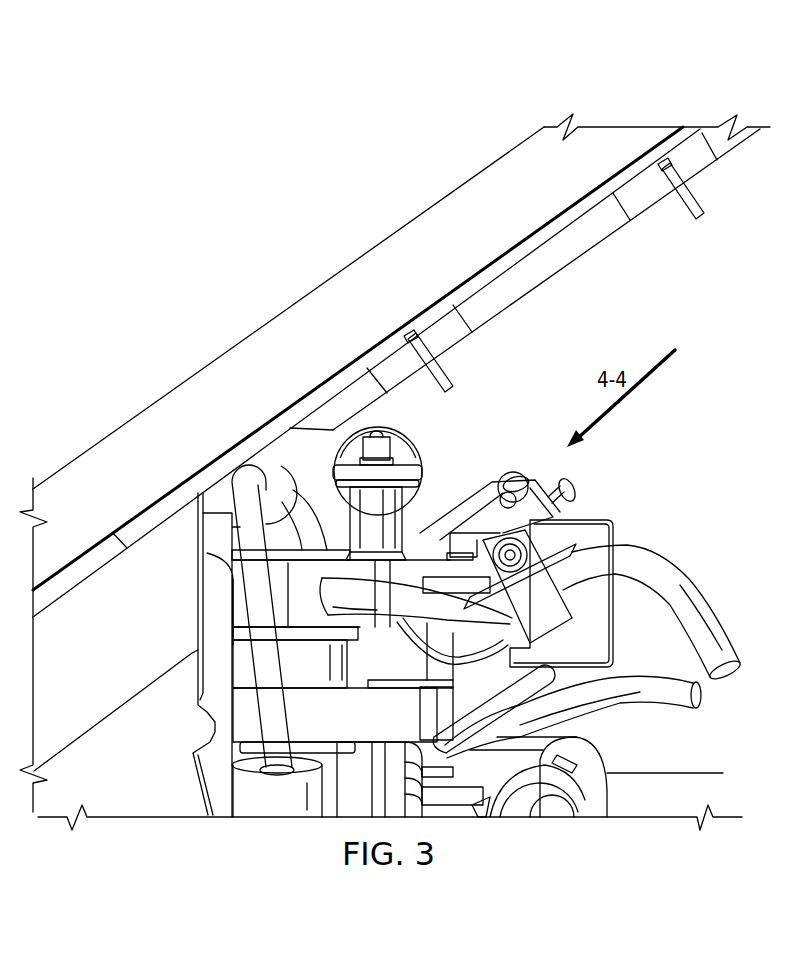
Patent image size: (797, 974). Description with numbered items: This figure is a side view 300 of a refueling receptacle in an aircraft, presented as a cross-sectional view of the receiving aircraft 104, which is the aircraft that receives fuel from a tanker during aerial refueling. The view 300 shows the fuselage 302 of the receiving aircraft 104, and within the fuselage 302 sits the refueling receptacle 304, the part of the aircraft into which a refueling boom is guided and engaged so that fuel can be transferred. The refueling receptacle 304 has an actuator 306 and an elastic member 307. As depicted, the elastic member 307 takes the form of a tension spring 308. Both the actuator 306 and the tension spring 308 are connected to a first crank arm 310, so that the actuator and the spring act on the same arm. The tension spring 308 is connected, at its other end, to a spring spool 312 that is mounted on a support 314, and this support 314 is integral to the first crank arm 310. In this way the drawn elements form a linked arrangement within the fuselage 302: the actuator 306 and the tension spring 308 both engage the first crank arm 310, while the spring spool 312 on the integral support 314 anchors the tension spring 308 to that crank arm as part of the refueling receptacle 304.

The view 300 is at (156, 69).
The receiving aircraft 104 is at (200, 279).
The fuselage 302 is at (327, 292).
The refueling receptacle 304 is at (690, 493).
The actuator 306 is at (598, 520).
The elastic member 307 is at (420, 458).
The tension spring 308 is at (328, 402).
The first crank arm 310 is at (311, 550).
The spring spool 312 is at (400, 452).
The support 314 is at (405, 527).